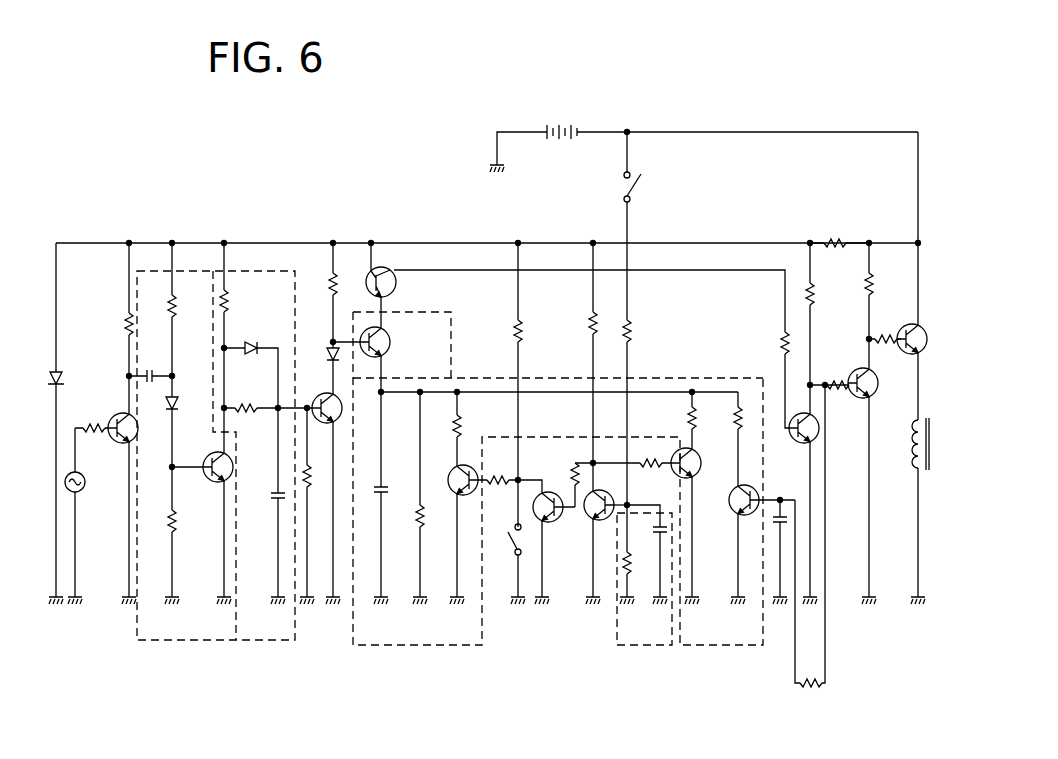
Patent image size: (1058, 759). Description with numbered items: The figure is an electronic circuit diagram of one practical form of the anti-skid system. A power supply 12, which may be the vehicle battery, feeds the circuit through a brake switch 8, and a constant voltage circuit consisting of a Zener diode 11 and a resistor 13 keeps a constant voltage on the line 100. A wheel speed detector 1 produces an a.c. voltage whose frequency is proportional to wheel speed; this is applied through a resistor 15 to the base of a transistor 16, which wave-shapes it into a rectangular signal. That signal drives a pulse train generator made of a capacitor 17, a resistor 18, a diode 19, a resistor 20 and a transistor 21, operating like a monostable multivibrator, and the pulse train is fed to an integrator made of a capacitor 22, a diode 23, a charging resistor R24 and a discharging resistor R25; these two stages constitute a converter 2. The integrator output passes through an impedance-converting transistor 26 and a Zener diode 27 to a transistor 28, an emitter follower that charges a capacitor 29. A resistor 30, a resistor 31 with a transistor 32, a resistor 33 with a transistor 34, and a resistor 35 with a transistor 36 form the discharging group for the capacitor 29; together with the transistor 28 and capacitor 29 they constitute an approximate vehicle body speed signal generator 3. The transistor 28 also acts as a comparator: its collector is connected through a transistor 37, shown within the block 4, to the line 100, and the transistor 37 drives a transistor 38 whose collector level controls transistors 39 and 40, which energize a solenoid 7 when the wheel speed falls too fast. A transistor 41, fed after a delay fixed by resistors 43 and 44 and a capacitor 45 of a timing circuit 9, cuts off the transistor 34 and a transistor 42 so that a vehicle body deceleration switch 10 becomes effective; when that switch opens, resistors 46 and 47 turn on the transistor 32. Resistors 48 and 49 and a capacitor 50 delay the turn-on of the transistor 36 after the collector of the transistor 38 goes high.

The wheel speed detector 1 is at (84, 478).
The converter 2 is at (237, 640).
The approximate vehicle body speed signal generator 3 is at (413, 645).
The amplifier stage block 4 is at (452, 322).
The solenoid 7 is at (913, 445).
The brake switch 8 is at (640, 188).
The timing circuit 9 is at (638, 645).
The vehicle body deceleration switch 10 is at (508, 538).
The Zener diode 11 is at (59, 377).
The power supply 12 is at (558, 125).
The resistor 13 is at (836, 243).
The resistor 15 is at (97, 425).
The transistor 16 is at (136, 430).
The capacitor 17 is at (149, 371).
The resistor 18 is at (171, 305).
The diode 19 is at (177, 404).
The resistor 20 is at (203, 518).
The transistor 21 is at (210, 478).
The capacitor 22 is at (271, 494).
The diode 23 is at (251, 344).
The charging resistor R24 is at (229, 300).
The discharging resistor R25 is at (245, 400).
The transistor 26 is at (322, 397).
The Zener diode 27 is at (326, 352).
The transistor 28 is at (390, 342).
The capacitor 29 is at (392, 476).
The resistor 30 is at (414, 520).
The resistor 31 is at (462, 420).
The transistor 32 is at (448, 468).
The resistor 33 is at (686, 416).
The transistor 34 is at (696, 455).
The resistor 35 is at (733, 418).
The transistor 36 is at (730, 510).
The transistor 37 is at (396, 287).
The transistor 38 is at (790, 440).
The transistor 39 is at (850, 373).
The transistor 40 is at (907, 326).
The transistor 41 is at (585, 520).
The transistor 42 is at (562, 494).
The resistor 43 is at (632, 335).
The resistor 44 is at (632, 562).
The capacitor 45 is at (656, 530).
The resistor 46 is at (523, 335).
The resistor 47 is at (492, 478).
The resistor 48 is at (816, 300).
The resistor 49 is at (812, 680).
The capacitor 50 is at (786, 518).
The line 100 is at (268, 243).